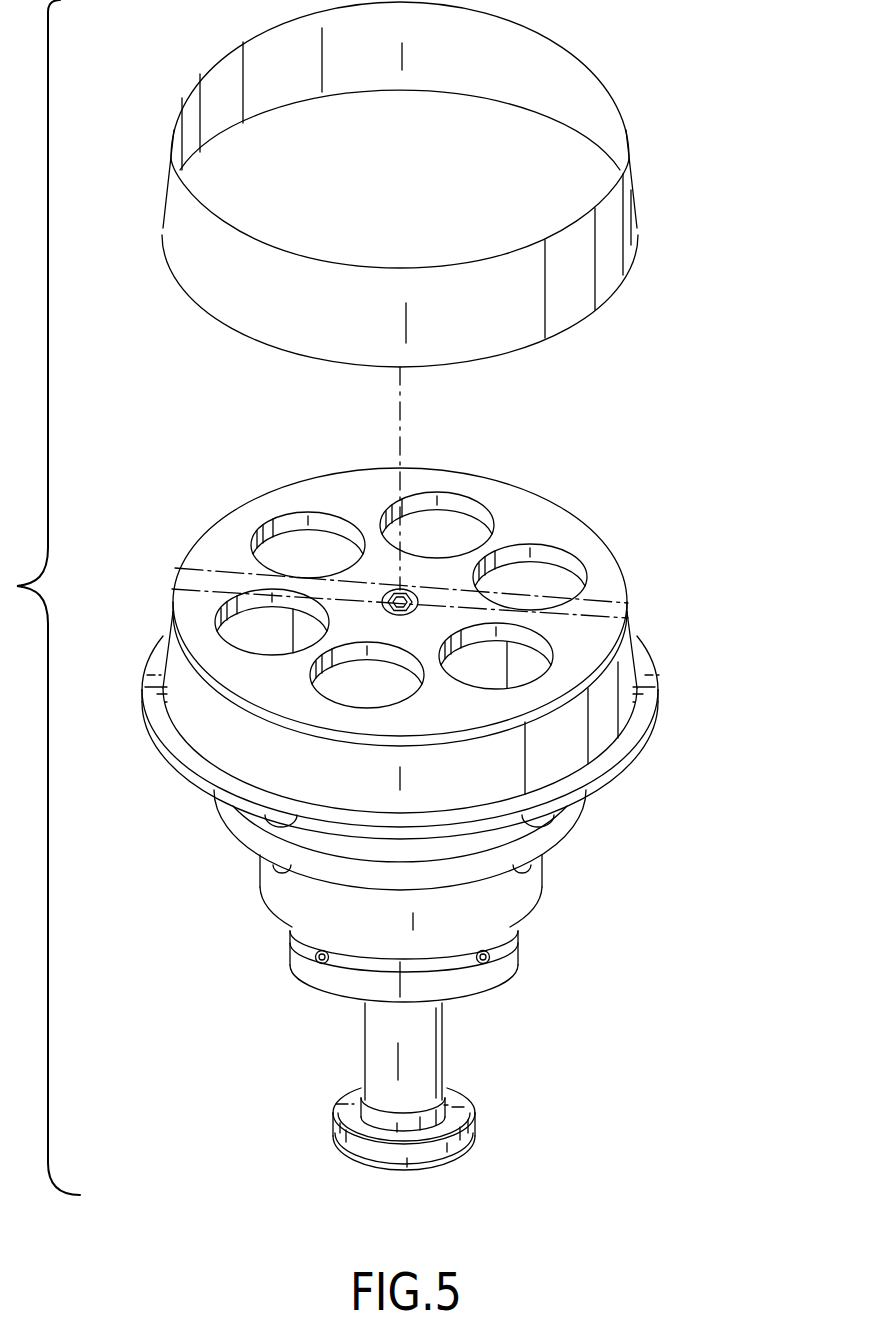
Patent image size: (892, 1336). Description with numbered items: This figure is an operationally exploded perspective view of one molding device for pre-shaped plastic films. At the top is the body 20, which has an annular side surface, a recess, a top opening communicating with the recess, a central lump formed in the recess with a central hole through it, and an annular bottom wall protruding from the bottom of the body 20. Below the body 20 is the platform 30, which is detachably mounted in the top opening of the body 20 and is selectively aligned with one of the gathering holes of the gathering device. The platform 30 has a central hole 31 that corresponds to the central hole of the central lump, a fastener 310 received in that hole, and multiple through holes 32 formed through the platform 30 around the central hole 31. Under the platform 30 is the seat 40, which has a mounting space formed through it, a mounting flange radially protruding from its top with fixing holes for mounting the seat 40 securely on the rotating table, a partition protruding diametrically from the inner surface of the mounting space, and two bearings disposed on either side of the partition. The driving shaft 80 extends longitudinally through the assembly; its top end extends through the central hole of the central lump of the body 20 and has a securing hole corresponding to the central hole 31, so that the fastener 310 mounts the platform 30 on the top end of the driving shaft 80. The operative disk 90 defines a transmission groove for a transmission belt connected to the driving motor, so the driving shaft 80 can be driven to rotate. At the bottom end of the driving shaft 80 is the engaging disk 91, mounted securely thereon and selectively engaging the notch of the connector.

The body 20 is at (617, 705).
The platform 30 is at (613, 585).
The central hole 31 is at (383, 598).
The fastener 310 is at (404, 597).
The through holes 32 is at (520, 558).
The seat 40 is at (543, 842).
The driving shaft 80 is at (427, 1072).
The operative disk 90 is at (500, 963).
The engaging disk 91 is at (448, 1155).